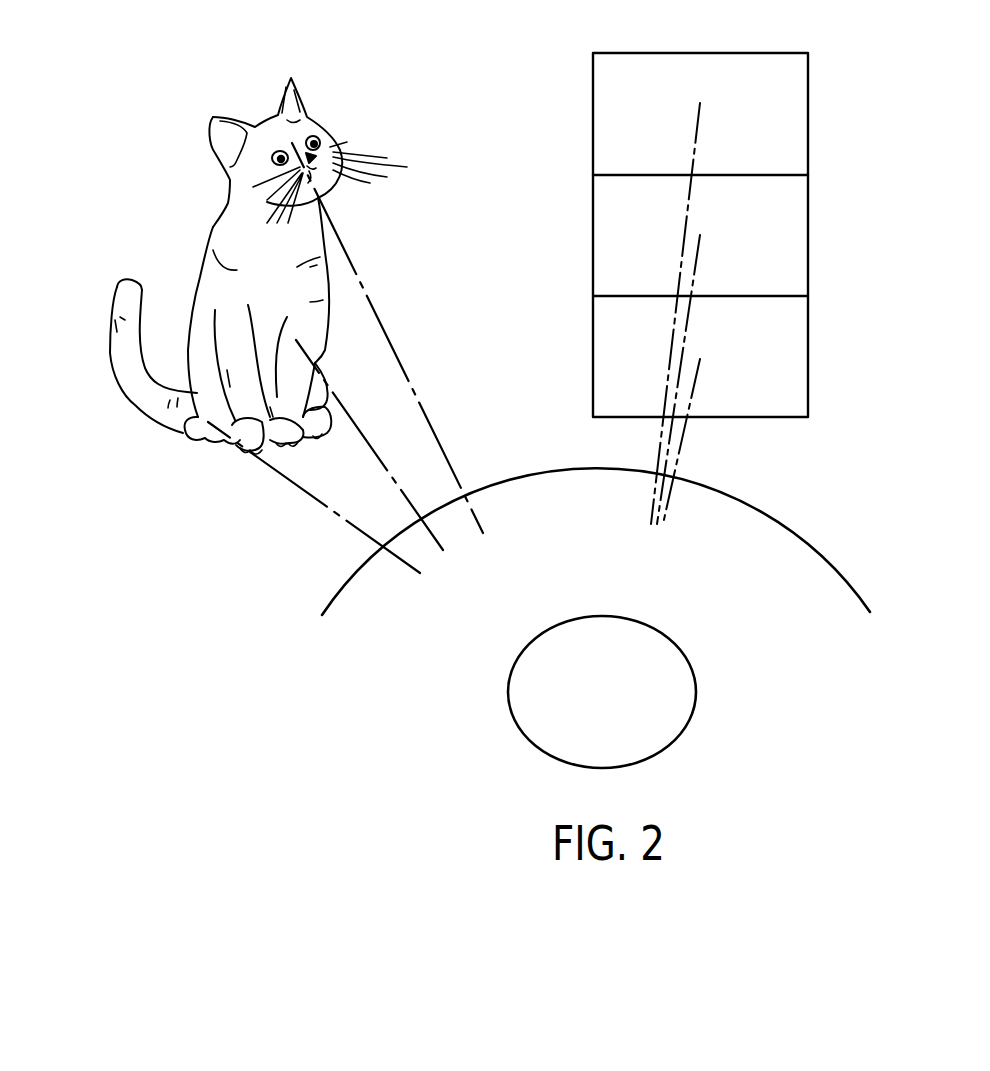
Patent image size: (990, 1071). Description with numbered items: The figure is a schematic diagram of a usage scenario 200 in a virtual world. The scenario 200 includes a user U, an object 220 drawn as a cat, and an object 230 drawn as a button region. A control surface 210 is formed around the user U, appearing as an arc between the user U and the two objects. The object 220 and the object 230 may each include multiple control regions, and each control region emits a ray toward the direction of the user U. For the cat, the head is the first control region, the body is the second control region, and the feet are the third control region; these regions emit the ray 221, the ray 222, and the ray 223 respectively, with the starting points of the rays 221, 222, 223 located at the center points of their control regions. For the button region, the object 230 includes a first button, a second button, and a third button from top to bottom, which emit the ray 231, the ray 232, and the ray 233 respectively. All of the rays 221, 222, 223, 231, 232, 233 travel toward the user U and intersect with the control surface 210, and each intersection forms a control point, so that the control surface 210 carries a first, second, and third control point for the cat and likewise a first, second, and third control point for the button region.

The scenario 200 is at (966, 742).
The control surface 210 is at (344, 588).
The object (cat) 220 is at (220, 117).
The ray (first ray) 221 is at (372, 307).
The ray (second ray) 222 is at (377, 450).
The ray (third ray) 223 is at (278, 472).
The object (button region) 230 is at (808, 108).
The ray (first ray) 231 is at (689, 212).
The ray (second ray) 232 is at (700, 250).
The ray (third ray) 233 is at (700, 373).
The user U is at (508, 685).